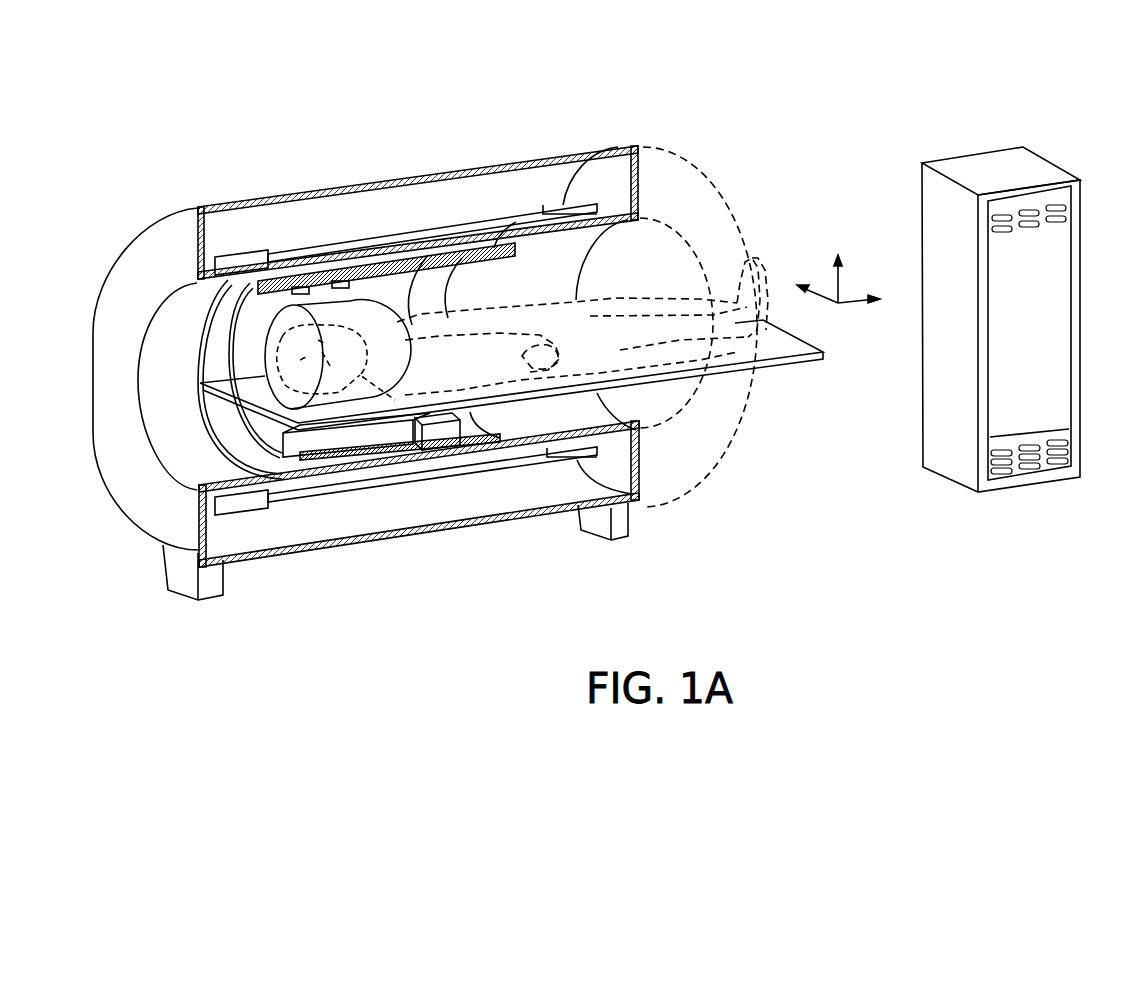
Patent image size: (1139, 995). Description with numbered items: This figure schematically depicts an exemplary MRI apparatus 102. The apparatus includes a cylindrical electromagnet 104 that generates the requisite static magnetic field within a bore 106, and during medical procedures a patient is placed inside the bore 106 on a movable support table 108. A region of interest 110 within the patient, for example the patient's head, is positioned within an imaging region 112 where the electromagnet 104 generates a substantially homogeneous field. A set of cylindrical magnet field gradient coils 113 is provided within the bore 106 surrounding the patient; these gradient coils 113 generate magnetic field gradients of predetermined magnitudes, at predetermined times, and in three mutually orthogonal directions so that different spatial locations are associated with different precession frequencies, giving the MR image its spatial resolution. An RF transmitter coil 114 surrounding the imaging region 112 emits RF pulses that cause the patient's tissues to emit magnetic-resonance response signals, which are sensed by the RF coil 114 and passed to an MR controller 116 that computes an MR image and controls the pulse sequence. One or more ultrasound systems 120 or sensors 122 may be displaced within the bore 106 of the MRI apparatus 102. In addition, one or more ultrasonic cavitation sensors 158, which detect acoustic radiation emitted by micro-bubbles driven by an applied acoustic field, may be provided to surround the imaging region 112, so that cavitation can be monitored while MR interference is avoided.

The MRI apparatus 102 is at (602, 592).
The cylindrical electromagnet 104 is at (418, 233).
The bore 106 is at (663, 403).
The movable support table 108 is at (787, 360).
The region of interest 110 is at (290, 358).
The imaging region 112 is at (322, 292).
The cylindrical magnet field gradient coils 113 is at (517, 222).
The RF transmitter coil 114 is at (252, 453).
The MR controller 116 is at (933, 463).
The ultrasound system 120 is at (375, 450).
The sensor 122 is at (447, 433).
The ultrasonic cavitation sensor 158 is at (296, 282).